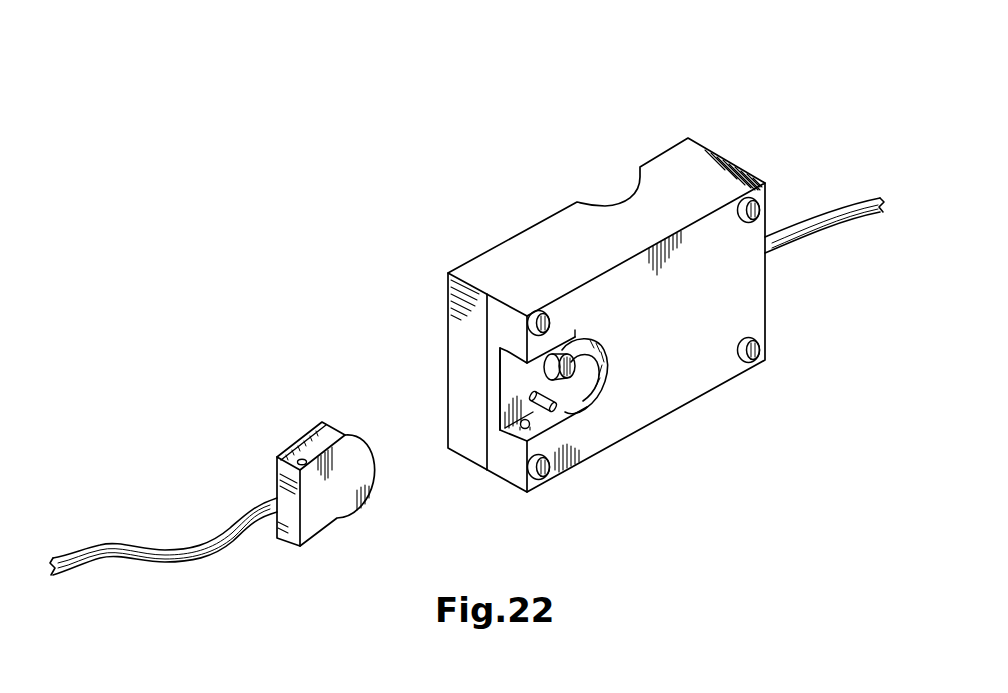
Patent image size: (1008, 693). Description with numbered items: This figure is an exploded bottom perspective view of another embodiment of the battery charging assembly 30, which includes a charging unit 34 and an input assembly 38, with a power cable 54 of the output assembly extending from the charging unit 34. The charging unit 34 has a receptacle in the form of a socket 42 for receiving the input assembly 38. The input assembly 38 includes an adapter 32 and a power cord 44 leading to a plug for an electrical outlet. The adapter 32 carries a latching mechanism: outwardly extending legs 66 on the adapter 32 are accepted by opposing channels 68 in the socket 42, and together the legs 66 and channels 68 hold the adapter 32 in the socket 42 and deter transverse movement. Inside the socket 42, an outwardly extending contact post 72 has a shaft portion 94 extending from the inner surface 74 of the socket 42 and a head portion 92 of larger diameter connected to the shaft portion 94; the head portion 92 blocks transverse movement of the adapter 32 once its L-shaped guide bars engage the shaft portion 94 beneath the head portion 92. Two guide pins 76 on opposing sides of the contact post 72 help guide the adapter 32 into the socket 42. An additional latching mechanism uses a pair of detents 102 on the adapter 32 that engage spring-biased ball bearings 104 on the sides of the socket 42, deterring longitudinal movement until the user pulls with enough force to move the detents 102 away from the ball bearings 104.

The battery charging assembly 30 is at (722, 104).
The charging unit 34 is at (730, 323).
The power cable 54 is at (818, 210).
The channels 68 is at (505, 348).
The socket 42 is at (500, 381).
The inner surface 74 is at (525, 403).
The spring-biased ball bearings 104 is at (535, 420).
The guide pins 76 is at (556, 410).
The contact post 72 is at (573, 352).
The head portion 92 is at (608, 368).
The shaft portion 94 is at (575, 330).
The input assembly 38 is at (164, 506).
The adapter 32 is at (333, 512).
The legs 66 is at (322, 432).
The detents 102 is at (298, 459).
The power cord 44 is at (177, 560).